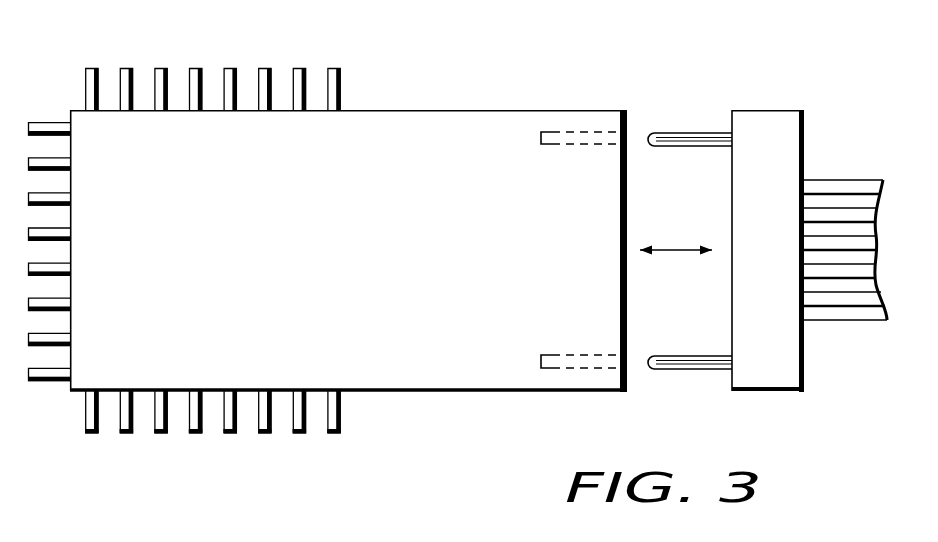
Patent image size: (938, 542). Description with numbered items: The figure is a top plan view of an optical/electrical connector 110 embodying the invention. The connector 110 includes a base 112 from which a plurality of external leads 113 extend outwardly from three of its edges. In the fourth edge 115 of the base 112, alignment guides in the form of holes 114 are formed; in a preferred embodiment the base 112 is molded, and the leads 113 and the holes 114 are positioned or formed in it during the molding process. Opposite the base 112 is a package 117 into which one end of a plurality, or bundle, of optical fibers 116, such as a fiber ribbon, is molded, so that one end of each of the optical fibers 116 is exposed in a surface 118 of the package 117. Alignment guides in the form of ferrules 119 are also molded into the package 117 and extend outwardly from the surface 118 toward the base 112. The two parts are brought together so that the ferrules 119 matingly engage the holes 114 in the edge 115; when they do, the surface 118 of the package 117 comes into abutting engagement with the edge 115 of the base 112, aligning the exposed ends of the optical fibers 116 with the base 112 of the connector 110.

The optical/electrical connector 110 is at (487, 438).
The base 112 is at (360, 208).
The external leads 113 is at (160, 67).
The holes 114 is at (578, 132).
The fourth edge 115 is at (627, 335).
The optical fibers 116 is at (830, 180).
The package 117 is at (752, 110).
The surface 118 is at (730, 207).
The ferrules 119 is at (700, 133).